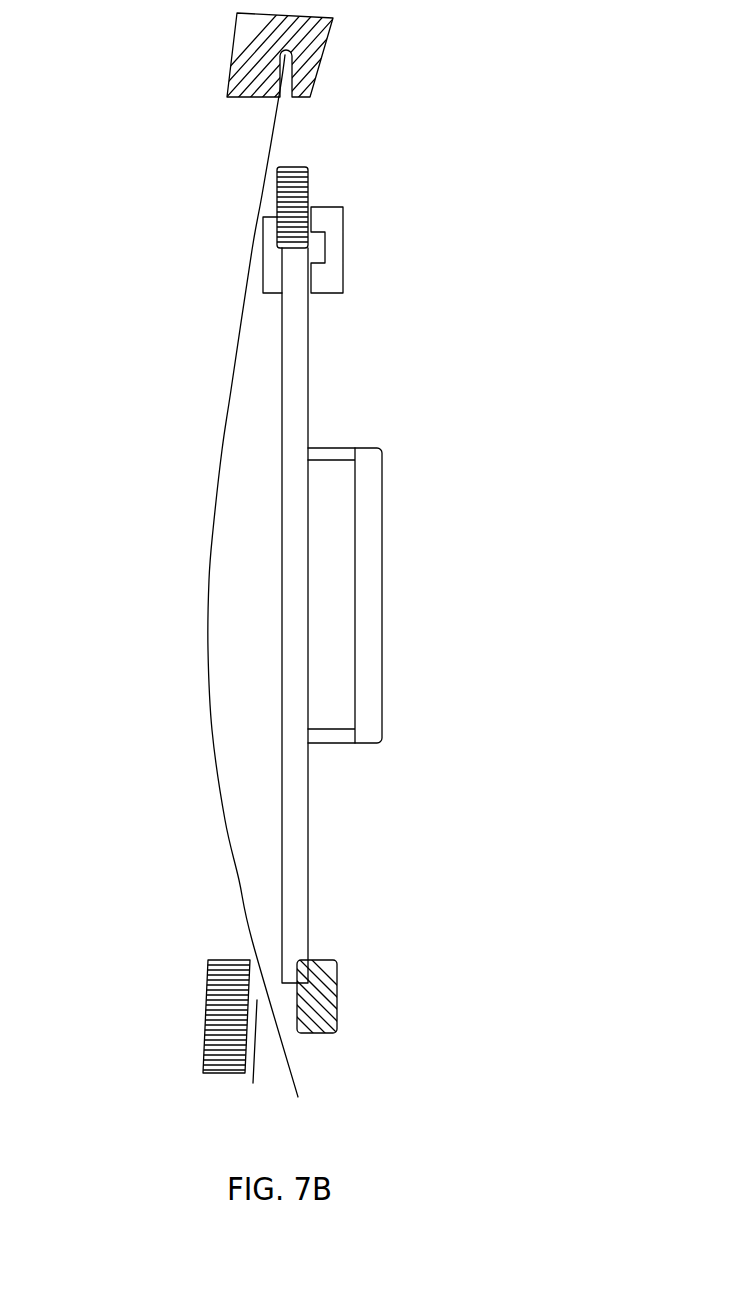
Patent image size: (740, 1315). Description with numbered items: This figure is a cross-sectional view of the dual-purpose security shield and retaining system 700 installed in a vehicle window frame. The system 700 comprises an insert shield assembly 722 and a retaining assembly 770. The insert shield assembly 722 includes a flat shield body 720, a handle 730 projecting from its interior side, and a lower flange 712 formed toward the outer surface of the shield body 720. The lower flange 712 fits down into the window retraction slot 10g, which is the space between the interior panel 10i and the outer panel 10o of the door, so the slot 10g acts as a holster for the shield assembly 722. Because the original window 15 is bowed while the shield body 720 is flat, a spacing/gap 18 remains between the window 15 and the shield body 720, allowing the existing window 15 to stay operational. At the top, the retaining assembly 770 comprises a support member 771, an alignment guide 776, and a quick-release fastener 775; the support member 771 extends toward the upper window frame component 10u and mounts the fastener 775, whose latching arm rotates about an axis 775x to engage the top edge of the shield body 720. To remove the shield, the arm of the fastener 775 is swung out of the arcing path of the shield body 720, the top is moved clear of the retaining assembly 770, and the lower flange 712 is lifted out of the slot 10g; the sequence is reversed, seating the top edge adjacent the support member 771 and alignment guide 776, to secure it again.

The dual-purpose security shield and retaining system 700 is at (535, 404).
The retaining assembly 770 is at (398, 314).
The insert shield assembly 722 is at (410, 450).
The window 15 is at (222, 448).
The spacing/gap 18 is at (250, 530).
The upper window frame component 10u is at (313, 33).
The support member 771 is at (300, 182).
The quick-release fastener 775 is at (333, 277).
The axis 775x is at (340, 222).
The alignment guide 776 is at (273, 250).
The shield body 720 is at (293, 875).
The handle 730 is at (365, 543).
The lower flange 712 is at (283, 970).
The outer panel 10o is at (203, 1005).
The interior panel 10i is at (337, 1000).
The window retraction slot 10g is at (247, 1065).